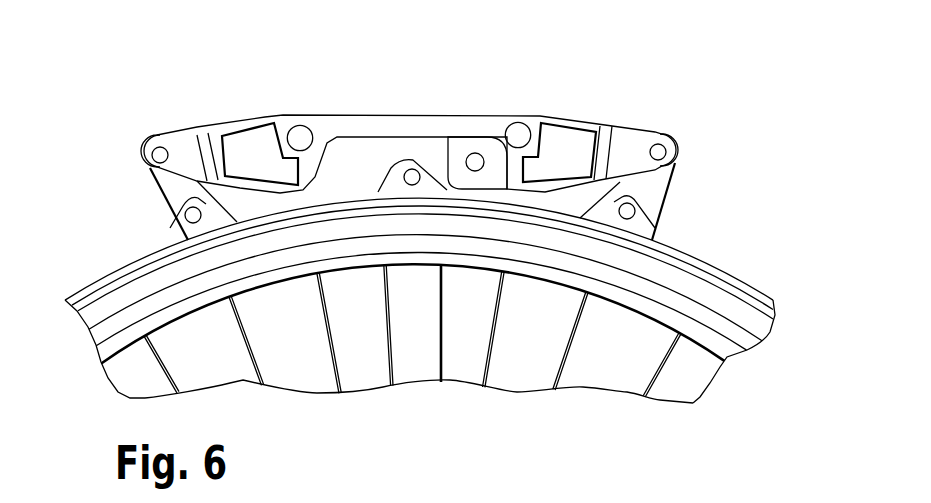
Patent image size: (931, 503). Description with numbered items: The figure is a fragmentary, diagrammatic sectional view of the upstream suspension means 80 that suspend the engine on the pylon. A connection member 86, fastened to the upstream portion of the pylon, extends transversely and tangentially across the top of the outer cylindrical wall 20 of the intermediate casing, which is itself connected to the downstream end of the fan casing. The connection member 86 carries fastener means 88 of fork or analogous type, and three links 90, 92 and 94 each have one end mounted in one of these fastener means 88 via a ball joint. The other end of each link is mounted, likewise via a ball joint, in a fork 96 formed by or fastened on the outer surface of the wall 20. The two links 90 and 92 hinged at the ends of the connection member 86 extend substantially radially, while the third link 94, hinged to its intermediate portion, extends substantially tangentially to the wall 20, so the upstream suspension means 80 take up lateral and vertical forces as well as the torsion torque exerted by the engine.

The outer cylindrical wall of the intermediate casing 20 is at (720, 273).
The upstream suspension means 80 is at (403, 134).
The connection member 86 is at (378, 113).
The fastener means 88 is at (190, 136).
The link 90 is at (152, 195).
The link 92 is at (667, 188).
The third link 94 is at (432, 143).
The fork 96 is at (385, 180).